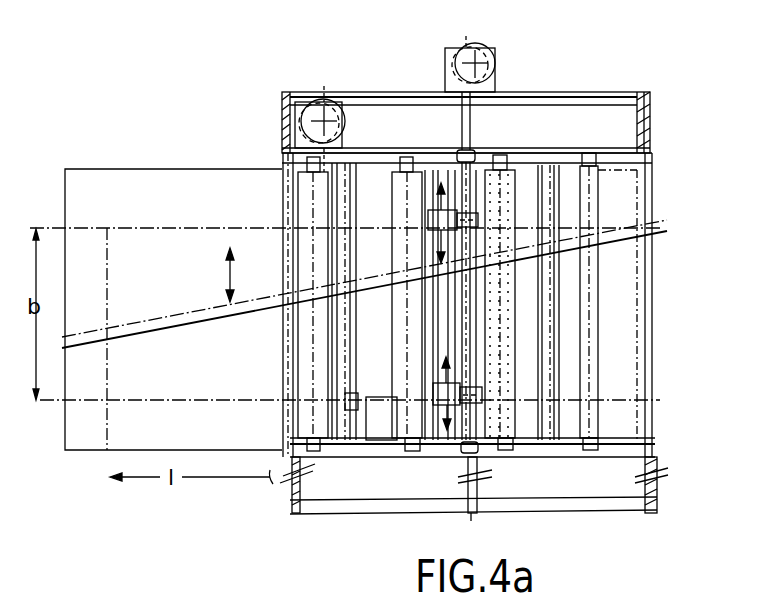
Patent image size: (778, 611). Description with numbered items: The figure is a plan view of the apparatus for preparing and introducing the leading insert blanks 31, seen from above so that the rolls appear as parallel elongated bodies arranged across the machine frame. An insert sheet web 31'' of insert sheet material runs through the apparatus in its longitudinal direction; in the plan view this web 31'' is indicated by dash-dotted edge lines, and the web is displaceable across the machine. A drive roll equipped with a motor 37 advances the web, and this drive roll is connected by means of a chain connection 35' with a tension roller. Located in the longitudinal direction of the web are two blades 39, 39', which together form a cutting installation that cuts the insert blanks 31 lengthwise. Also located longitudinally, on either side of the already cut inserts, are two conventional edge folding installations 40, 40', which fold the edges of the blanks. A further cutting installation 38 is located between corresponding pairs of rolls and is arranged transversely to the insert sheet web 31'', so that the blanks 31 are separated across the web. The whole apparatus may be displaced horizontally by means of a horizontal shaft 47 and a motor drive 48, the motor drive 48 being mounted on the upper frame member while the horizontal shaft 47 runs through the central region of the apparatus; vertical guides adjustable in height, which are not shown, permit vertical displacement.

The insert blank 31 is at (348, 284).
The insert sheet web 31'' is at (558, 241).
The chain connection 35' is at (467, 103).
The motor 37 is at (300, 126).
The motor drive 48 is at (489, 69).
The edge folding installation 40' is at (339, 223).
The blade 39' is at (599, 202).
The horizontal shaft 47 is at (470, 322).
The edge folding installation 40 is at (344, 389).
The blade 39 is at (600, 404).
The cutting installation 38 is at (347, 407).